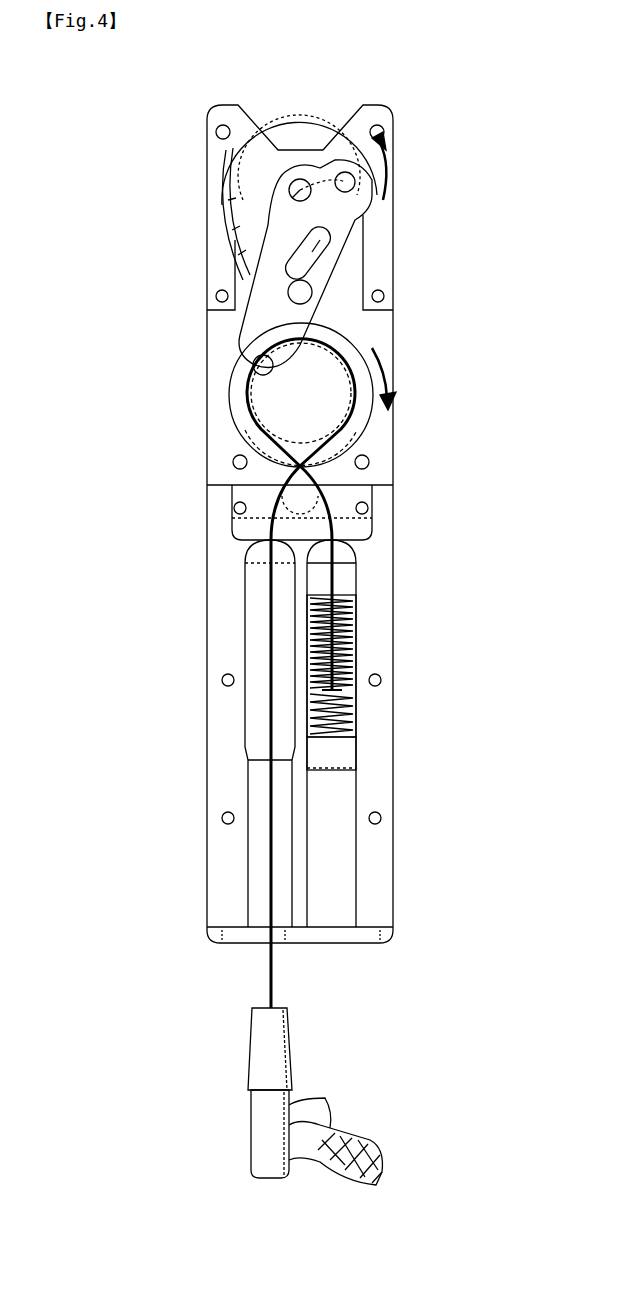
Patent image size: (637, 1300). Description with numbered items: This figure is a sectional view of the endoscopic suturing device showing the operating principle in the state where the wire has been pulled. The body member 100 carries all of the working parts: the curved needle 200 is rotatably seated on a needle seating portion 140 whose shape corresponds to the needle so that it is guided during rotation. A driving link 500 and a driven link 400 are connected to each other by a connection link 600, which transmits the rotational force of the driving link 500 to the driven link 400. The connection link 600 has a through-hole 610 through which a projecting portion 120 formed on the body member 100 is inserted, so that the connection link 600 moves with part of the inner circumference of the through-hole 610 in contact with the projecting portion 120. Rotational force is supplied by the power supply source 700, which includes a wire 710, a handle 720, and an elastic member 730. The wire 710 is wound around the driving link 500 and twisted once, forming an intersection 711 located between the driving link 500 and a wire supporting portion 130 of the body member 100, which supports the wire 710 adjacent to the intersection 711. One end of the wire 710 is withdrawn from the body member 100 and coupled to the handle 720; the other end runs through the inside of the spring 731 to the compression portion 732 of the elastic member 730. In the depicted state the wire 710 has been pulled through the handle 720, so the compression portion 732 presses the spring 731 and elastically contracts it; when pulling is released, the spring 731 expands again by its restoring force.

The body member 100 is at (395, 150).
The projecting portion 120 is at (318, 297).
The wire supporting portion 130 is at (370, 515).
The needle seating portion 140 is at (237, 262).
The curved needle 200 is at (287, 112).
The driven link 400 is at (313, 165).
The driving link 500 is at (332, 403).
The connection link 600 is at (342, 267).
The through-hole 610 is at (345, 258).
The power supply source 700 is at (255, 1096).
The wire 710 is at (348, 673).
The intersection 711 is at (335, 478).
The handle 720 is at (258, 1143).
The elastic member 730 is at (402, 682).
The spring 731 is at (350, 700).
The compression portion 732 is at (345, 753).